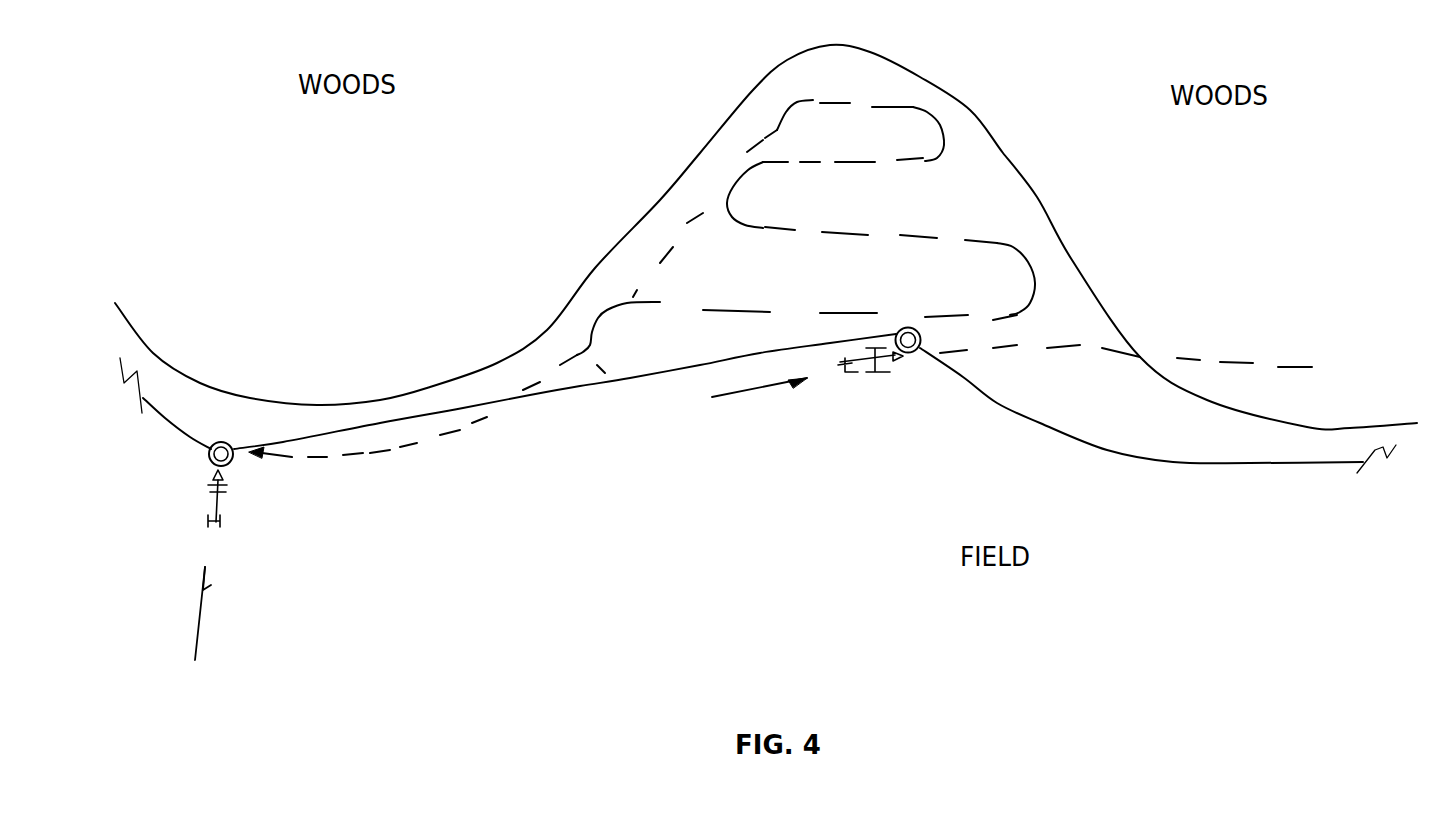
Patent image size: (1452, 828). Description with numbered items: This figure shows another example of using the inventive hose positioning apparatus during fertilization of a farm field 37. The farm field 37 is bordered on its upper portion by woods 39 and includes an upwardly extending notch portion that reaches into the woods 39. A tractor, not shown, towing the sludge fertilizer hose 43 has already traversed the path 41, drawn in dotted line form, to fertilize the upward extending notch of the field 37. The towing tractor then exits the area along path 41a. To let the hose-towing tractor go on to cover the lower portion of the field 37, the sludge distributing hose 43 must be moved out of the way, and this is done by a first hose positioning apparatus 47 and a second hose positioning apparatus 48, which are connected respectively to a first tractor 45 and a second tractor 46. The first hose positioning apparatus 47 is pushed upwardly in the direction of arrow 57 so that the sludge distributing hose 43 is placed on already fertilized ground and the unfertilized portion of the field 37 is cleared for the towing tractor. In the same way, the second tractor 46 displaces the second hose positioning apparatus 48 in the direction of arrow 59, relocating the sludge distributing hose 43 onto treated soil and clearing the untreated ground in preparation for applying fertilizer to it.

The farm field 37 is at (805, 548).
The woods 39 is at (488, 150).
The path 41 is at (668, 245).
The path 41a is at (1222, 360).
The sludge fertilizer hose 43 is at (580, 387).
The first tractor 45 is at (218, 505).
The second tractor 46 is at (855, 370).
The first hose positioning apparatus 47 is at (208, 459).
The second hose positioning apparatus 48 is at (927, 357).
The arrow 57 is at (200, 617).
The arrow 59 is at (735, 393).